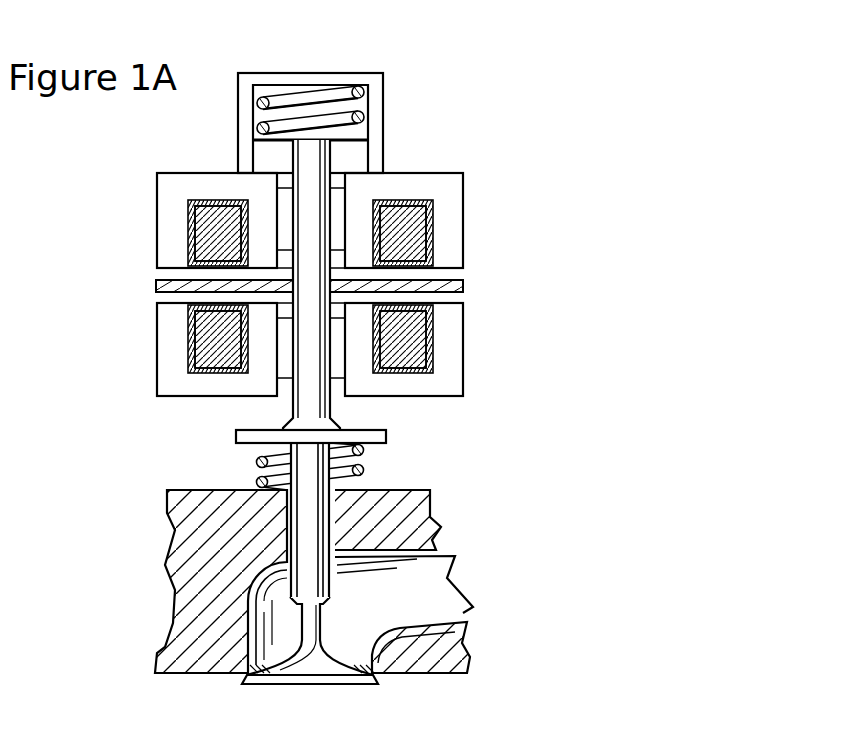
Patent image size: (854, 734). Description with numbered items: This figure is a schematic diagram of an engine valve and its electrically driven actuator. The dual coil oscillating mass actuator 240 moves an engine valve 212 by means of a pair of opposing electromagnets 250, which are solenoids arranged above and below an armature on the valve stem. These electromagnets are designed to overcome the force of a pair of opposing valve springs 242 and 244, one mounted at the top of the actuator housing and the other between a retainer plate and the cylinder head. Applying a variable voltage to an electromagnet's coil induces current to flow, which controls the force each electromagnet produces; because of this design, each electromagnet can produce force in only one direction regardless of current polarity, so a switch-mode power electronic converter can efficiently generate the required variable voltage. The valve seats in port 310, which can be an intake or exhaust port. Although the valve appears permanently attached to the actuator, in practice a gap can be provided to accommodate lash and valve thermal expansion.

The engine valve 212 is at (312, 628).
The dual coil oscillating mass actuator 240 is at (530, 302).
The valve spring 242 is at (335, 93).
The valve spring 244 is at (360, 472).
The electromagnet 250 is at (456, 194).
The port 310 is at (440, 590).